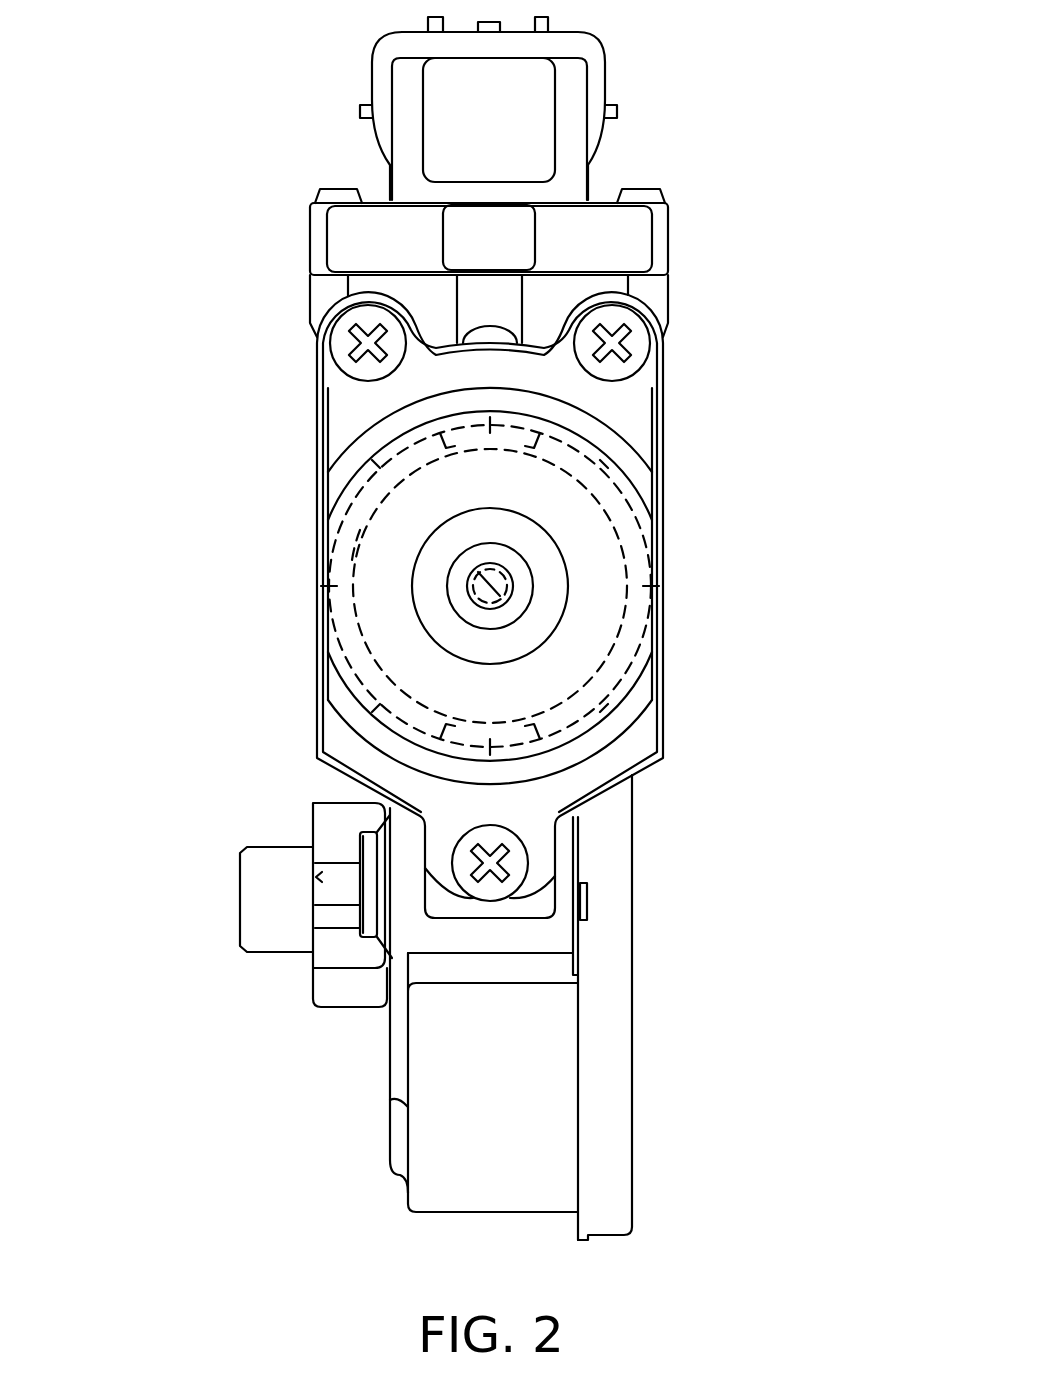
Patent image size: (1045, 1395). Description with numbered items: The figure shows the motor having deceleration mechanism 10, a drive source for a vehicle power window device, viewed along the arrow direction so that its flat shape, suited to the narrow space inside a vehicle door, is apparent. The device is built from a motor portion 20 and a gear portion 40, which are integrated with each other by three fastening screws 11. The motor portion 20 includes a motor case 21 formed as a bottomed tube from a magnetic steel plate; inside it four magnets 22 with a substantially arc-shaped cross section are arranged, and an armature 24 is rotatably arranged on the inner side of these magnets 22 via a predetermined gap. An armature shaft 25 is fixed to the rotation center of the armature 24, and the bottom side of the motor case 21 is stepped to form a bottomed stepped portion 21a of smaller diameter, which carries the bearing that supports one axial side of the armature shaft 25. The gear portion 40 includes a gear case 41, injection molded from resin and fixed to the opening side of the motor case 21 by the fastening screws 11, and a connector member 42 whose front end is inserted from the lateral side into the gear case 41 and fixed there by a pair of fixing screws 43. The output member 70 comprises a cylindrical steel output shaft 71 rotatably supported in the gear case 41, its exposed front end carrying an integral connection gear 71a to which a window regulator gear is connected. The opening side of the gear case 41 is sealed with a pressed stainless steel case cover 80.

The motor having deceleration mechanism 10 is at (318, 74).
The fastening screws 11 is at (345, 344).
The motor portion 20 is at (318, 590).
The motor case 21 is at (640, 588).
The bottomed stepped portion 21a is at (513, 567).
The magnets 22 is at (356, 454).
The armature 24 is at (377, 570).
The armature shaft 25 is at (503, 600).
The gear portion 40 is at (398, 1204).
The gear case 41 is at (485, 1088).
The connector member 42 is at (508, 137).
The fixing screws 43 is at (338, 190).
The output member 70 is at (258, 842).
The output shaft 71 is at (273, 902).
The connection gear 71a is at (347, 988).
The case cover 80 is at (628, 1088).